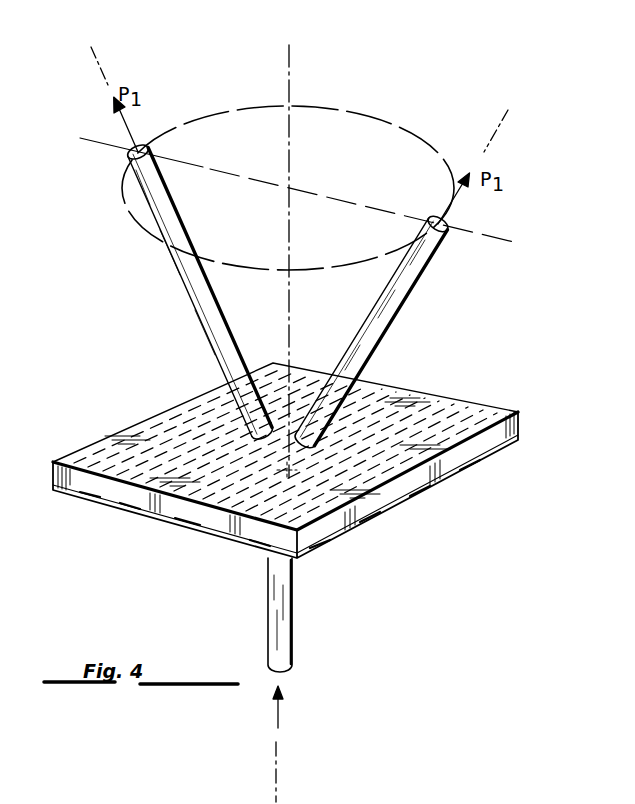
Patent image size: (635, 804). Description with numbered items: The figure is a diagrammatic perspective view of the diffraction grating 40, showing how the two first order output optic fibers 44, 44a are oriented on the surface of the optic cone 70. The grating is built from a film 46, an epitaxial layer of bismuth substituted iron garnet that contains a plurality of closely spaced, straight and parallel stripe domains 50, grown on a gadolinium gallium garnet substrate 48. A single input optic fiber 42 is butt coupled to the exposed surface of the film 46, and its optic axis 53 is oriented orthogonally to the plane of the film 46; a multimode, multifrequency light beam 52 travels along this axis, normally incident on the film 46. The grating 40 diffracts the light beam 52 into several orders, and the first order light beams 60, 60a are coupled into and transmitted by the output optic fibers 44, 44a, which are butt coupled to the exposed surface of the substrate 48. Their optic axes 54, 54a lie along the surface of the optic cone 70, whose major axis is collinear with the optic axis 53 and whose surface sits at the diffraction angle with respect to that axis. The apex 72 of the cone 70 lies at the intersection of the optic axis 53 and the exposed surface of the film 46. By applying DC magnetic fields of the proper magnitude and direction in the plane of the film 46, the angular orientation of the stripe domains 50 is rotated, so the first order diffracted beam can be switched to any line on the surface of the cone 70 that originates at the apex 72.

The diffraction grating 40 is at (522, 418).
The input optic fiber 42 is at (293, 610).
The output optic fiber 44 is at (183, 288).
The output optic fiber 44a is at (407, 303).
The film 46 is at (373, 522).
The substrate 48 is at (452, 400).
The stripe domains 50 is at (102, 502).
The light beam 52 is at (281, 708).
The optic axis 53 is at (298, 762).
The optic axis 54 is at (103, 79).
The optic axis 54a is at (488, 148).
The first order light beam 60 is at (128, 128).
The first order light beam 60a is at (458, 192).
The optic cone 70 is at (382, 122).
The apex 72 is at (292, 477).